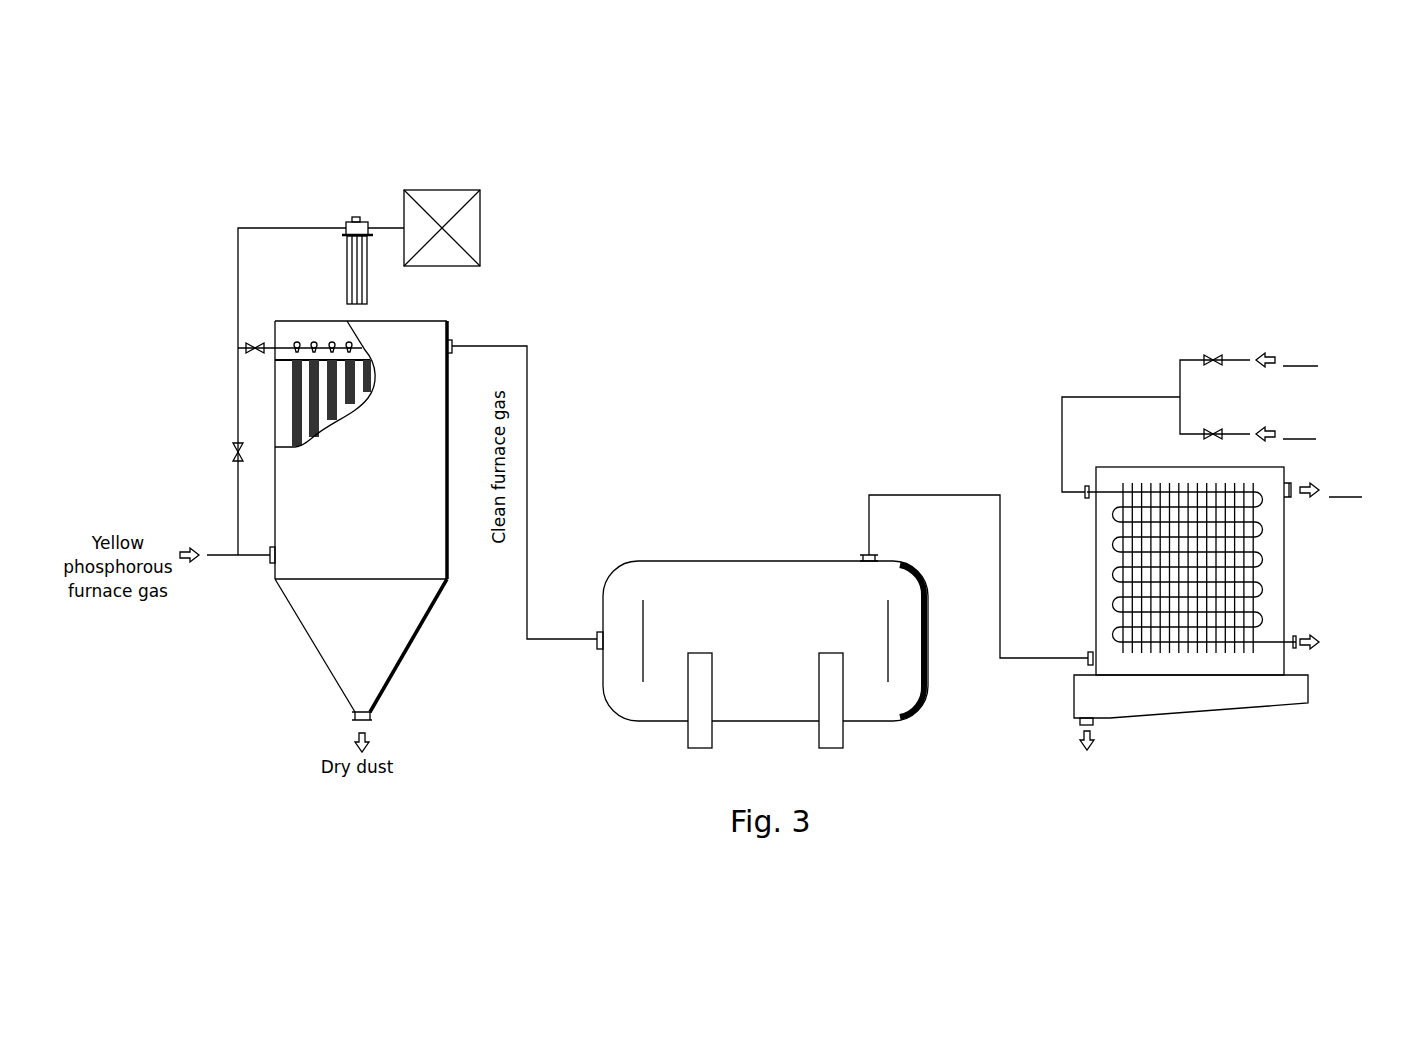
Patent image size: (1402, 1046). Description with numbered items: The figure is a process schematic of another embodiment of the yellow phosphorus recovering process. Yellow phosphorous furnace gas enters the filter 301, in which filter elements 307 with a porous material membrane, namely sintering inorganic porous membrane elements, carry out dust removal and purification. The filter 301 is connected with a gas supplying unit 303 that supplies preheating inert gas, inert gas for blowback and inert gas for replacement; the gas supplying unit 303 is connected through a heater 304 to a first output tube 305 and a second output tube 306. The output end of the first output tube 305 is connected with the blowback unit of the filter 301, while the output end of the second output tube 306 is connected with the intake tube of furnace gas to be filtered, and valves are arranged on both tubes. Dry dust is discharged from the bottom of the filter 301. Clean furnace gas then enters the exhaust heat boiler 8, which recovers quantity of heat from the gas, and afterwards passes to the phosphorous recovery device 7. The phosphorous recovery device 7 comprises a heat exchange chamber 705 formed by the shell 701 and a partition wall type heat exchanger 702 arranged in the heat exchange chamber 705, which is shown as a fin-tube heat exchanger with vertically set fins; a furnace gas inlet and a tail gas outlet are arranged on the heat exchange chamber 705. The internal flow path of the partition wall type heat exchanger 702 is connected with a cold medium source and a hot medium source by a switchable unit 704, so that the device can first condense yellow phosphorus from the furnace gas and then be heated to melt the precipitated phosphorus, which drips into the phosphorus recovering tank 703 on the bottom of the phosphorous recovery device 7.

The filter 301 is at (370, 491).
The gas supplying unit 303 is at (441, 188).
The heater 304 is at (344, 253).
The first output tube 305 is at (267, 346).
The second output tube 306 is at (237, 413).
The filter element 307 is at (290, 415).
The exhaust heat boiler 8 is at (750, 575).
The phosphorous recovery device 7 is at (1208, 542).
The shell 701 is at (1285, 590).
The partition wall type heat exchanger 702 is at (1118, 568).
The phosphorus recovering tank 703 is at (1308, 688).
The switchable unit 704 is at (1158, 381).
The heat exchange chamber 705 is at (1108, 620).